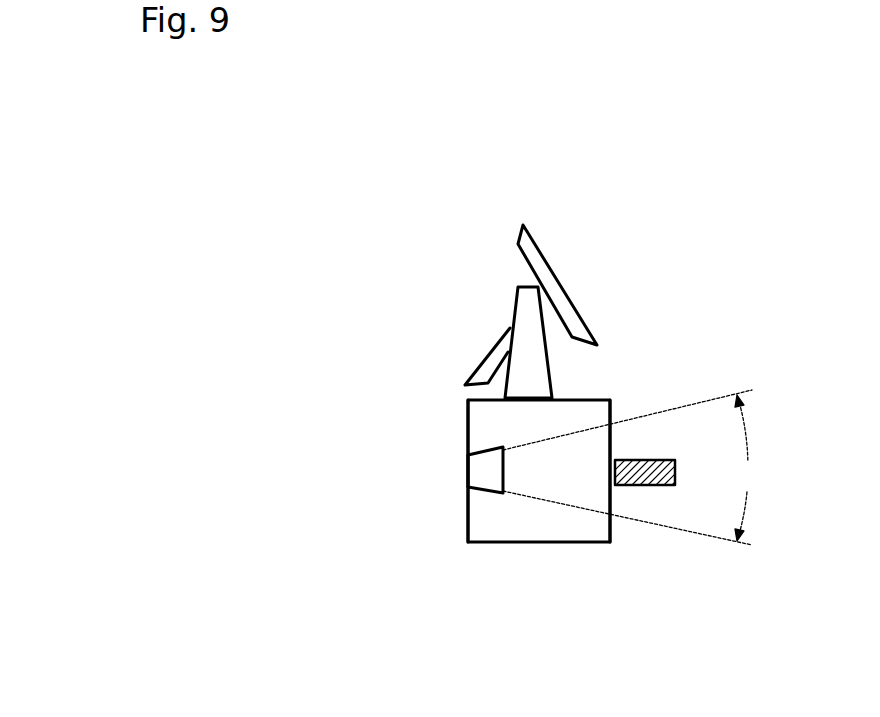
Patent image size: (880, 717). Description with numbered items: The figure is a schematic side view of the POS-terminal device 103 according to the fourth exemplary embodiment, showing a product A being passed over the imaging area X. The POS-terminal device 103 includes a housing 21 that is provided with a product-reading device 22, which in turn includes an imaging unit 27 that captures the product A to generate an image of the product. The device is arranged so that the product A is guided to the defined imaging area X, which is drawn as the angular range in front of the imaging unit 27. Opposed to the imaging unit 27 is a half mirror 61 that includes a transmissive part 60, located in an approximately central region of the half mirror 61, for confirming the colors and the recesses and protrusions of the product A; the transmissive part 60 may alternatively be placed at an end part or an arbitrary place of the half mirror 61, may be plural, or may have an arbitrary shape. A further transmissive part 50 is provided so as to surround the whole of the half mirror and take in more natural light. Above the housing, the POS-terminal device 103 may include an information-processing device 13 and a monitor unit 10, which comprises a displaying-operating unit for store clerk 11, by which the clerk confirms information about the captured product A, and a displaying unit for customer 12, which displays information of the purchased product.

The POS-terminal device 103 is at (687, 147).
The monitor unit 10 is at (405, 215).
The displaying-operating unit for store clerk 11 is at (520, 239).
The displaying unit for customer 12 is at (487, 361).
The information-processing device 13 is at (520, 395).
The housing 21 is at (522, 542).
The product-reading device 22 is at (483, 527).
The imaging unit 27 is at (487, 471).
The transmissive part 50 is at (610, 415).
The transmissive part 60 is at (610, 473).
The half mirror 61 is at (610, 502).
The product A is at (650, 460).
The imaging area X is at (745, 468).